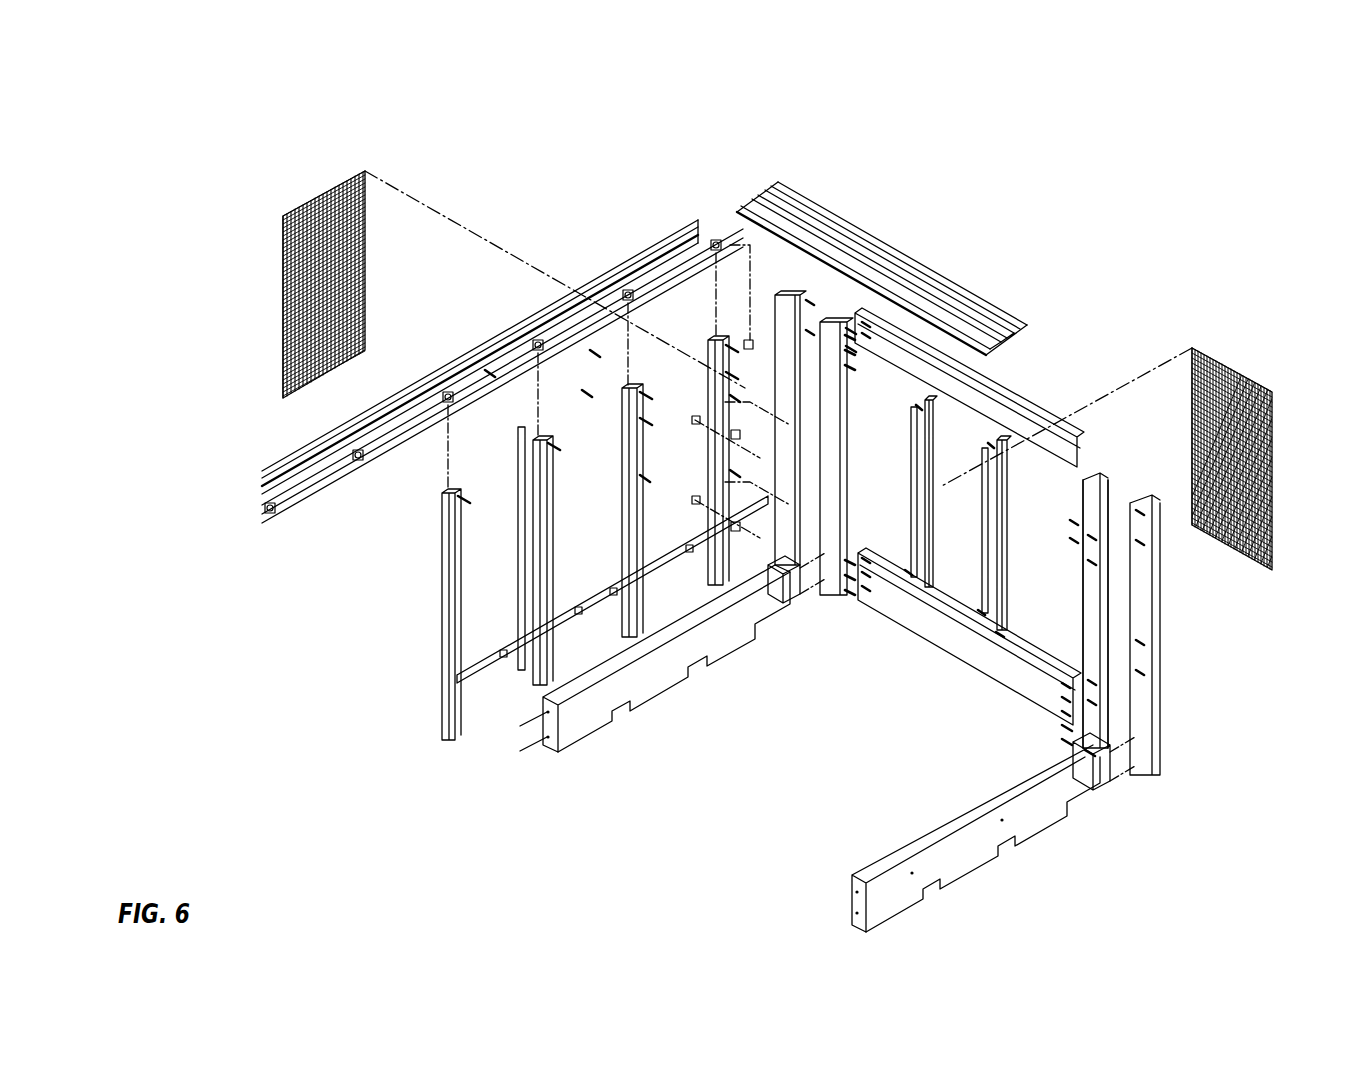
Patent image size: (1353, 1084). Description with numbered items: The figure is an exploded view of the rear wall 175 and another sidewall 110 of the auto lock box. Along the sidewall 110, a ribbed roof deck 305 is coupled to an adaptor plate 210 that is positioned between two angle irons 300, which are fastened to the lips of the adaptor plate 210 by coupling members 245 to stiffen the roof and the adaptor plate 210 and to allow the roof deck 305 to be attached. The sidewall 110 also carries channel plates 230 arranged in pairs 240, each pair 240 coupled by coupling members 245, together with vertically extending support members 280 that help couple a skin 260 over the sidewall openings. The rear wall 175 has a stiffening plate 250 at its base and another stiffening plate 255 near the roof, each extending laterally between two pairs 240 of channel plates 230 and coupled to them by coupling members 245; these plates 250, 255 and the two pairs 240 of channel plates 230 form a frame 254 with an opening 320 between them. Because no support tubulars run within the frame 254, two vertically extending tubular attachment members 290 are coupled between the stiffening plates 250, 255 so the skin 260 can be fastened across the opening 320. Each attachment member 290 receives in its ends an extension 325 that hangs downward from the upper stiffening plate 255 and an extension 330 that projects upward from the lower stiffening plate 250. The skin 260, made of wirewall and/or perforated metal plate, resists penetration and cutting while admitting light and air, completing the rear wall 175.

The rear wall 175 is at (1008, 140).
The sidewall 110 is at (343, 592).
The skin 260 is at (304, 210).
The ribbed roof deck 305 is at (822, 196).
The angle iron 300 is at (290, 453).
The adaptor plate 210 is at (292, 487).
The channel plate 230 is at (778, 298).
The support member 280 is at (983, 542).
The pair of channel plates 240 is at (822, 612).
The stiffening plate 255 is at (983, 385).
The stiffening plate 250 is at (940, 647).
The frame 254 is at (1083, 565).
The tubular attachment member 290 is at (935, 436).
The opening 320 is at (980, 498).
The extension 325 is at (932, 387).
The coupling member 245 is at (917, 418).
The extension 330 is at (1000, 637).